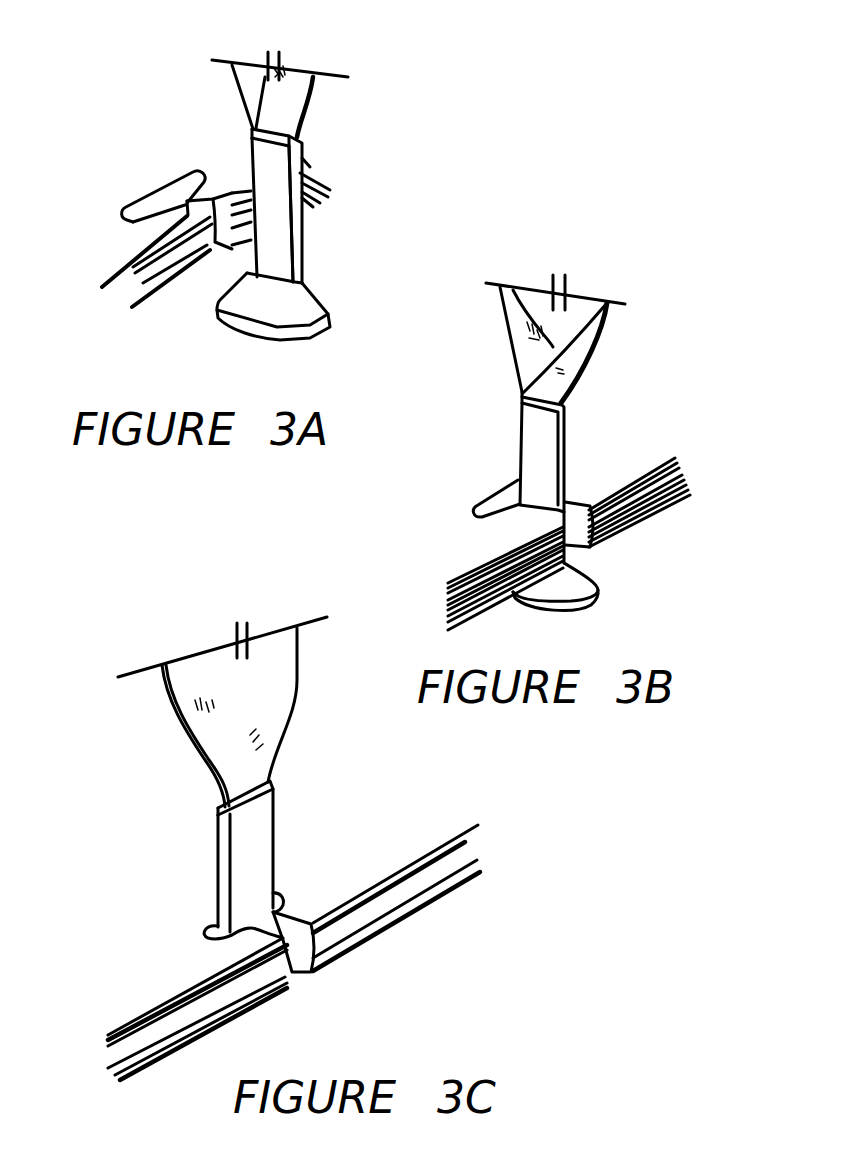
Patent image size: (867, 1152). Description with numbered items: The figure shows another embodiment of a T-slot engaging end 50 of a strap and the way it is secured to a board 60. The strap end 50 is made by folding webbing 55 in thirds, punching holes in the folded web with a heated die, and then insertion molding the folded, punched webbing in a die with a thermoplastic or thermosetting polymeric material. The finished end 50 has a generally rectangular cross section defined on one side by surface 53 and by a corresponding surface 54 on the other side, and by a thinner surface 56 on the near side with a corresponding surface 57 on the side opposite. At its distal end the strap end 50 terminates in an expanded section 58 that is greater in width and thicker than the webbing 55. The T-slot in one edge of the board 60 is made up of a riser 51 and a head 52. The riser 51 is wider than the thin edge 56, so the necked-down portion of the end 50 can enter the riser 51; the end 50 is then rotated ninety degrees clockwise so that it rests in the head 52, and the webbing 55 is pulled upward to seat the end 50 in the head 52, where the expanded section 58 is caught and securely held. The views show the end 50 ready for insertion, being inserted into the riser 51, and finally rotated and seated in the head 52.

In FIG. 3A, the T-slot engaging end 50 is at (270, 212).
In FIG. 3B, the T-slot engaging end 50 is at (600, 442).
In FIG. 3C, the T-slot engaging end 50 is at (208, 774).
In FIG. 3A, the riser 51 is at (140, 261).
In FIG. 3B, the riser 51 is at (570, 502).
In FIG. 3C, the riser 51 is at (293, 912).
In FIG. 3A, the head 52 is at (125, 216).
In FIG. 3B, the head 52 is at (476, 512).
In FIG. 3C, the head 52 is at (207, 927).
In FIG. 3A, the surface 53 is at (268, 178).
In FIG. 3C, the corresponding surface 54 is at (248, 853).
In FIG. 3A, the webbing 55 is at (245, 105).
In FIG. 3C, the webbing 55 is at (197, 747).
In FIG. 3A, the thinner surface 56 is at (290, 242).
In FIG. 3C, the corresponding surface 57 is at (223, 877).
In FIG. 3A, the expanded section 58 is at (330, 327).
In FIG. 3B, the expanded section 58 is at (555, 586).
In FIG. 3A, the board 60 is at (176, 266).
In FIG. 3B, the board 60 is at (557, 518).
In FIG. 3C, the board 60 is at (310, 952).